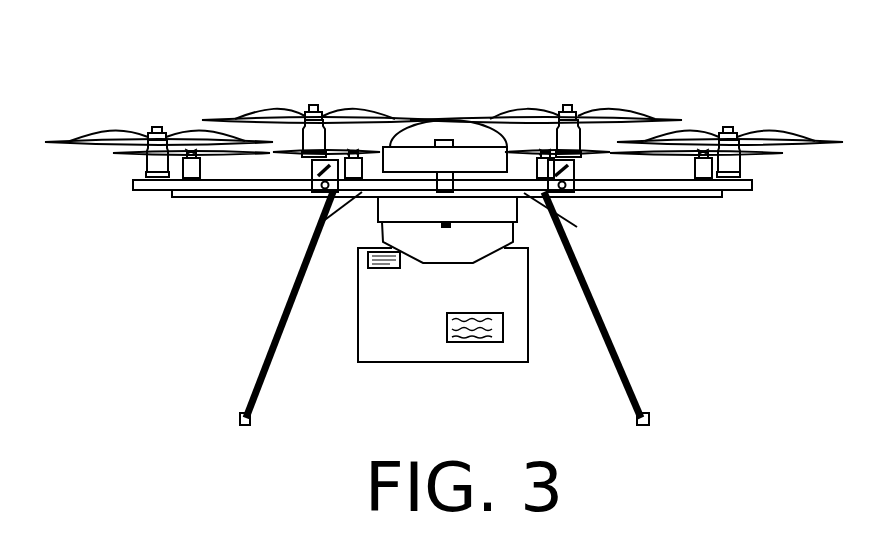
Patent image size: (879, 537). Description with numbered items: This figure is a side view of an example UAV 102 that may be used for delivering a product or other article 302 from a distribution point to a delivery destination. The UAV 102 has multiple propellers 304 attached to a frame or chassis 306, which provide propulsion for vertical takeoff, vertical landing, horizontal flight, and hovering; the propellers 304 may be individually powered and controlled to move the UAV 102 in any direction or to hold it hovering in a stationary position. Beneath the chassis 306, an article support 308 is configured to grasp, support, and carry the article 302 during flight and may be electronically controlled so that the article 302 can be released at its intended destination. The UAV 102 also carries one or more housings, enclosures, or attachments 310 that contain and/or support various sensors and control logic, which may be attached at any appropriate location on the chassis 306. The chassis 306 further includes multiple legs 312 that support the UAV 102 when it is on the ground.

The UAV 102 is at (444, 230).
The article 302 is at (404, 350).
The propellers 304 is at (102, 138).
The chassis 306 is at (671, 195).
The article support 308 is at (377, 240).
The housings 310 is at (458, 133).
The legs 312 is at (279, 316).